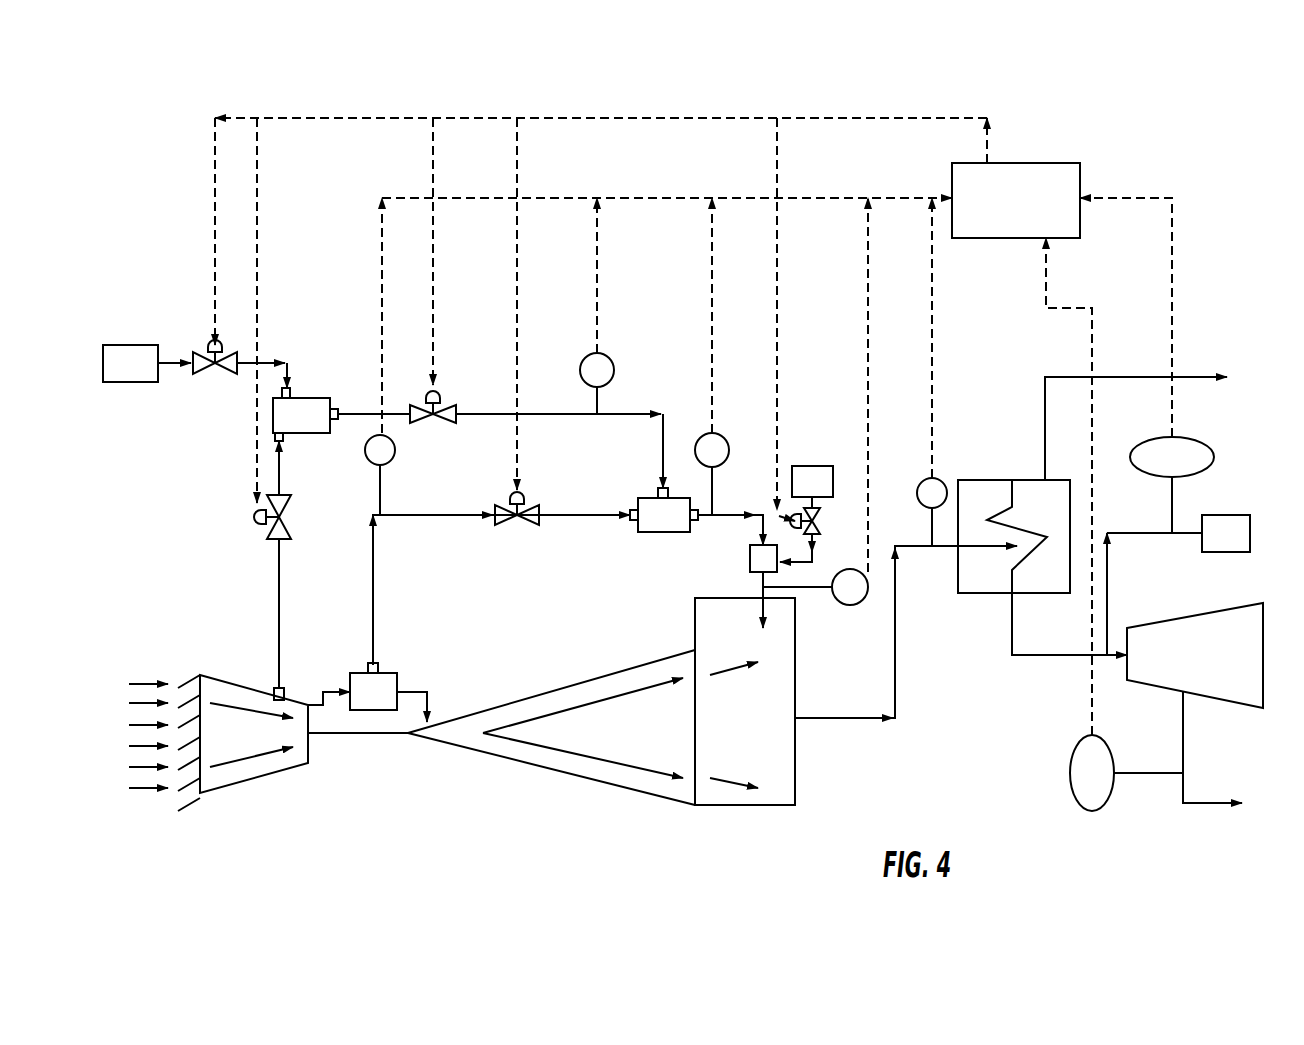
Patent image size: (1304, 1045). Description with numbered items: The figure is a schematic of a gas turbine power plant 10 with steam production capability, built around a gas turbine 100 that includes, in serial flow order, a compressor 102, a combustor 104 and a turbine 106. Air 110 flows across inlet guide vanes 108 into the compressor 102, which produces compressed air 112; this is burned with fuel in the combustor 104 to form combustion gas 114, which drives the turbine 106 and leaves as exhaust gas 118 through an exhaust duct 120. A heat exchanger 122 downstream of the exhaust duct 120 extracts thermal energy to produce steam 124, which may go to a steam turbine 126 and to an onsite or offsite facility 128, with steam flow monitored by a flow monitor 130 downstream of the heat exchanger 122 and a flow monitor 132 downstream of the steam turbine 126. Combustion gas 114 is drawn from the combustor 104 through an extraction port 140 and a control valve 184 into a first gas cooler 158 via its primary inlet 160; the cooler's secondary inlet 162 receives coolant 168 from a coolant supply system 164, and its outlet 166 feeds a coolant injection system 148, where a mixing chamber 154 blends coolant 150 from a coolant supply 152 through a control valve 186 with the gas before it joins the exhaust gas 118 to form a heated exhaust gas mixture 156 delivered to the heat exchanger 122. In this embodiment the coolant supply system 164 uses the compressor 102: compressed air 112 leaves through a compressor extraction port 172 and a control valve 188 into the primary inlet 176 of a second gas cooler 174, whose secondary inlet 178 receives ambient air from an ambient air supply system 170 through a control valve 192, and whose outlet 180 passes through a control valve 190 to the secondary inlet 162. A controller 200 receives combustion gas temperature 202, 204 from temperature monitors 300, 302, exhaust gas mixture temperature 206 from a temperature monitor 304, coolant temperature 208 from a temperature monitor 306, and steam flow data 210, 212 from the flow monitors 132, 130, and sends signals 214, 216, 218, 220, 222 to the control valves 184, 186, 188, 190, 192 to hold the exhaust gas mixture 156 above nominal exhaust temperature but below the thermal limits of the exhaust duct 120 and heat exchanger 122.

The gas turbine power plant 10 is at (1147, 168).
The gas turbine 100 is at (333, 808).
The compressor 102 is at (258, 678).
The combustor 104 is at (390, 673).
The turbine 106 is at (547, 772).
The inlet guide vanes 108 is at (190, 797).
The air 110 is at (132, 750).
The compressed air 112 is at (267, 718).
The combustion gas 114 is at (377, 580).
The exhaust gas 118 is at (715, 673).
The exhaust duct 120 is at (750, 805).
The heat exchanger 122 is at (965, 595).
The steam 124 is at (1107, 530).
The steam turbine 126 is at (1218, 610).
The facility 128 is at (1211, 547).
The flow monitor 130 is at (1205, 470).
The flow monitor 132 is at (1070, 783).
The extraction port 140 is at (373, 663).
The coolant injection system 148 is at (805, 464).
The coolant 150 is at (817, 543).
The coolant supply 152 is at (797, 495).
The mixing chamber 154 is at (750, 560).
The heated exhaust gas mixture 156 is at (795, 735).
The first gas cooler 158 is at (649, 529).
The primary inlet 160 is at (635, 525).
The secondary inlet 162 is at (668, 491).
The coolant supply system 164 is at (235, 402).
The outlet 166 is at (698, 522).
The coolant 168 is at (497, 417).
The ambient air supply system 170 is at (115, 377).
The compressor extraction port 172 is at (282, 688).
The second gas cooler 174 is at (286, 429).
The primary inlet 176 is at (275, 441).
The secondary inlet 178 is at (291, 390).
The outlet 180 is at (335, 408).
The control valve 184 is at (520, 528).
The control valve 186 is at (818, 508).
The control valve 188 is at (267, 537).
The control valve 190 is at (440, 402).
The control valve 192 is at (212, 348).
The controller 200 is at (1001, 214).
The combustion gas temperature 202 is at (382, 248).
The combustion gas temperature 204 is at (868, 327).
The exhaust gas mixture temperature 206 is at (932, 335).
The coolant temperature 208 is at (597, 297).
The steam flow data 210 is at (1046, 280).
The steam flow data 212 is at (1172, 237).
The signal 214 is at (517, 148).
The signal 216 is at (777, 148).
The signal 218 is at (257, 148).
The signal 220 is at (433, 173).
The signal 222 is at (215, 205).
The temperature monitor 300 is at (388, 455).
The temperature monitor 302 is at (850, 597).
The temperature monitor 304 is at (940, 493).
The temperature monitor 306 is at (600, 370).